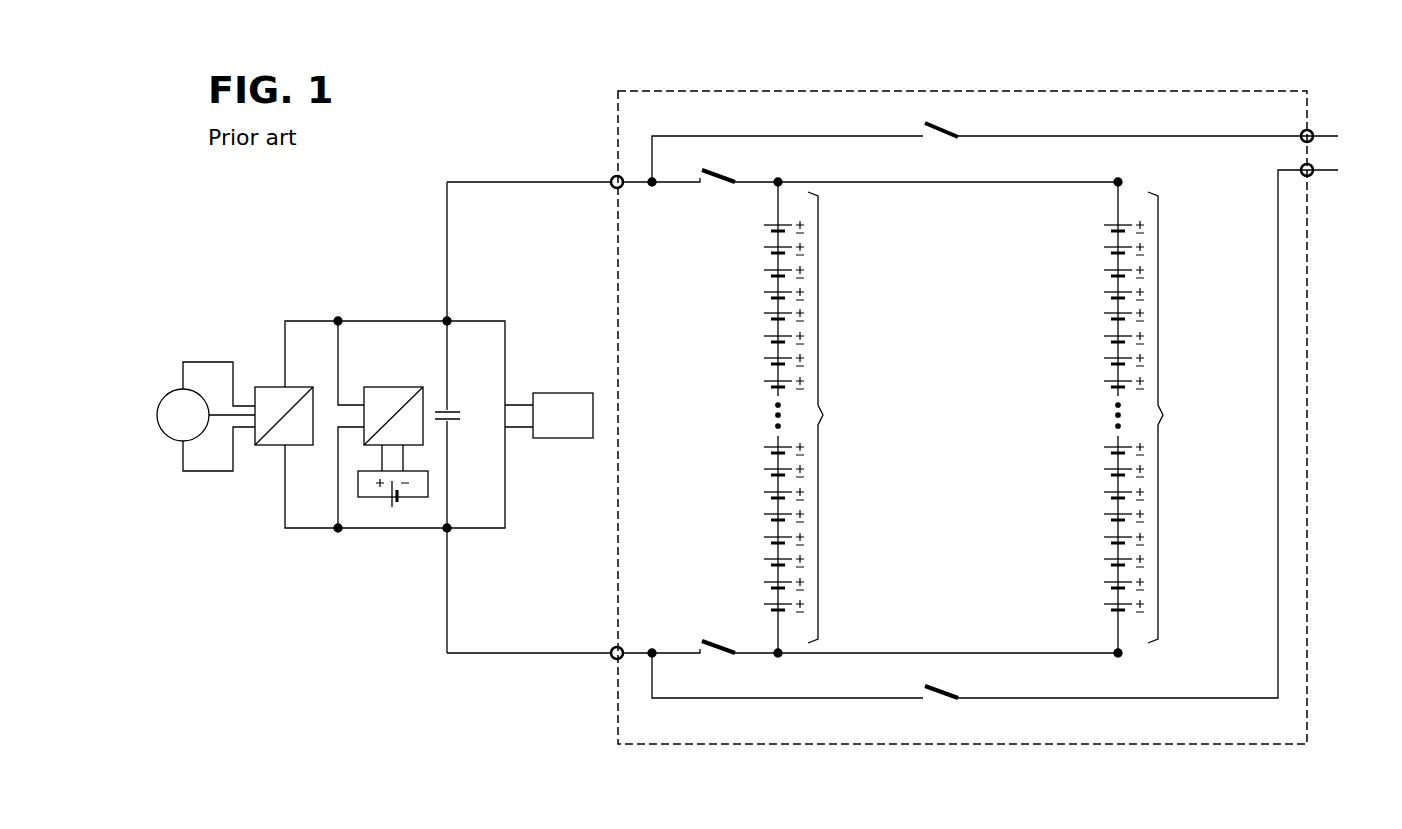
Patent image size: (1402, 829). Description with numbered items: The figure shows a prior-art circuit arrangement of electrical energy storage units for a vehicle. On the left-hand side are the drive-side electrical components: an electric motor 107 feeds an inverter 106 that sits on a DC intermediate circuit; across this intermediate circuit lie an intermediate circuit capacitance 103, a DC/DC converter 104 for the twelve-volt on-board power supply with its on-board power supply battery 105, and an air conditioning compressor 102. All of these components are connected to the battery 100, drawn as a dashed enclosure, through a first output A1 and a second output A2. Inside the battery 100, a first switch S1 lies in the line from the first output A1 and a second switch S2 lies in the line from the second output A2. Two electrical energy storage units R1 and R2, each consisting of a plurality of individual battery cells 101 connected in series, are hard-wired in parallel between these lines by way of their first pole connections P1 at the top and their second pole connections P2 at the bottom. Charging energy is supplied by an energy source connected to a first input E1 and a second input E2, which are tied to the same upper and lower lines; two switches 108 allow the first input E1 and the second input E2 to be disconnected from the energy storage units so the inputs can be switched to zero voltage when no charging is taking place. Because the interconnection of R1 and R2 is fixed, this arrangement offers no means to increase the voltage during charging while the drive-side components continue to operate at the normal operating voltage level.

The battery 100 is at (1307, 680).
The battery cells 101 is at (765, 336).
The air conditioning compressor 102 is at (553, 393).
The intermediate circuit capacitance 103 is at (456, 411).
The DC/DC converter 104 is at (400, 387).
The on-board power supply battery 105 is at (392, 506).
The inverter 106 is at (268, 387).
The electric motor 107 is at (178, 388).
The switches 108 is at (937, 138).
The first switch S1 is at (712, 177).
The second switch S2 is at (715, 641).
The first output A1 is at (611, 178).
The second output A2 is at (611, 659).
The first input E1 is at (1313, 131).
The second input E2 is at (1313, 176).
The first pole connections P1 is at (774, 186).
The second pole connections P2 is at (774, 650).
The first electrical energy storage unit R1 is at (847, 416).
The second electrical energy storage unit R2 is at (1184, 416).